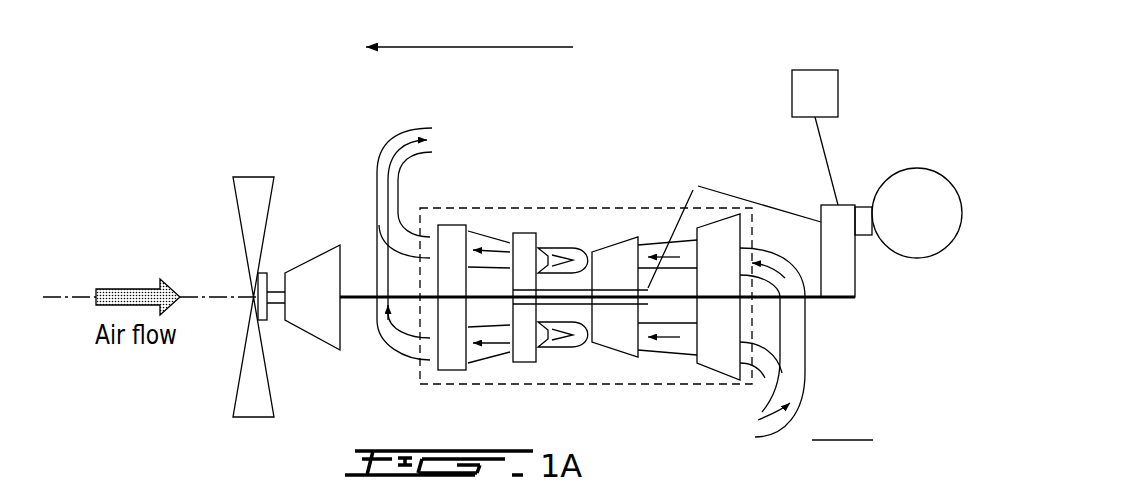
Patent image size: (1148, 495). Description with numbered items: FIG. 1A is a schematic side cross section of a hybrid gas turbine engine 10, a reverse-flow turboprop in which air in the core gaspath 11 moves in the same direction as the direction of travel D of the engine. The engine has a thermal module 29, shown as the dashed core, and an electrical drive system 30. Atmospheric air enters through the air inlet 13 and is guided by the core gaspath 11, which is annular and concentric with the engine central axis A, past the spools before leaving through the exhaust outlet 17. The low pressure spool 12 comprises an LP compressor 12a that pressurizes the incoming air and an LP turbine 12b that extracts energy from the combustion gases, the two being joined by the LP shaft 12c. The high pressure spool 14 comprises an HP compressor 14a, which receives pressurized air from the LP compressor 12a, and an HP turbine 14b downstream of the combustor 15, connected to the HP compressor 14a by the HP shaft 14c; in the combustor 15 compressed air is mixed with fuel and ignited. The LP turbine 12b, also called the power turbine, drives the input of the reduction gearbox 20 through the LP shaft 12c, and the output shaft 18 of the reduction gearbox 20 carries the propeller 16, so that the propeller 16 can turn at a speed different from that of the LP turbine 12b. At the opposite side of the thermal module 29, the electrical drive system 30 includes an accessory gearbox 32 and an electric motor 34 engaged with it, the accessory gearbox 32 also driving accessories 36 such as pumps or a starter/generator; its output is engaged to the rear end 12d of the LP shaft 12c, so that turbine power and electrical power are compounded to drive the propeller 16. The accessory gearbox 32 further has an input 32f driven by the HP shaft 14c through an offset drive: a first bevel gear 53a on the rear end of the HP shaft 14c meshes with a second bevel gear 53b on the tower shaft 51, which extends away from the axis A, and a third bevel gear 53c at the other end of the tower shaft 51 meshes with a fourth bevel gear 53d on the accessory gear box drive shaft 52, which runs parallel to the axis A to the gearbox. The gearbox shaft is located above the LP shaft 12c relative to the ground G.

The hybrid gas turbine engine 10 is at (698, 82).
The core gaspath 11 is at (667, 350).
The low pressure spool 12 is at (738, 122).
The low pressure compressor 12a is at (722, 230).
The low pressure turbine 12b is at (452, 225).
The low pressure shaft 12c is at (362, 295).
The rear end of the LP shaft 12d is at (840, 307).
The air inlet 13 is at (752, 436).
The high pressure spool 14 is at (594, 352).
The high pressure compressor 14a is at (615, 245).
The high pressure turbine 14b is at (522, 233).
The high pressure shaft 14c is at (581, 290).
The combustor 15 is at (562, 248).
The propeller 16 is at (247, 190).
The exhaust outlet 17 is at (415, 137).
The output shaft 18 is at (273, 305).
The reduction gearbox 20 is at (313, 259).
The thermal module 29 is at (492, 208).
The electrical drive system 30 is at (902, 140).
The accessory gearbox 32 is at (882, 270).
The gearbox input 32f is at (813, 212).
The electric motor 34 is at (927, 227).
The accessories 36 is at (818, 70).
The tower shaft 51 is at (677, 222).
The accessory gear box drive shaft 52 is at (757, 203).
The first bevel gear 53a is at (647, 306).
The second bevel gear 53b is at (648, 288).
The third bevel gear 53c is at (688, 187).
The fourth bevel gear 53d is at (678, 188).
The engine central axis A is at (200, 299).
The direction of travel D is at (483, 47).
The ground G is at (843, 440).